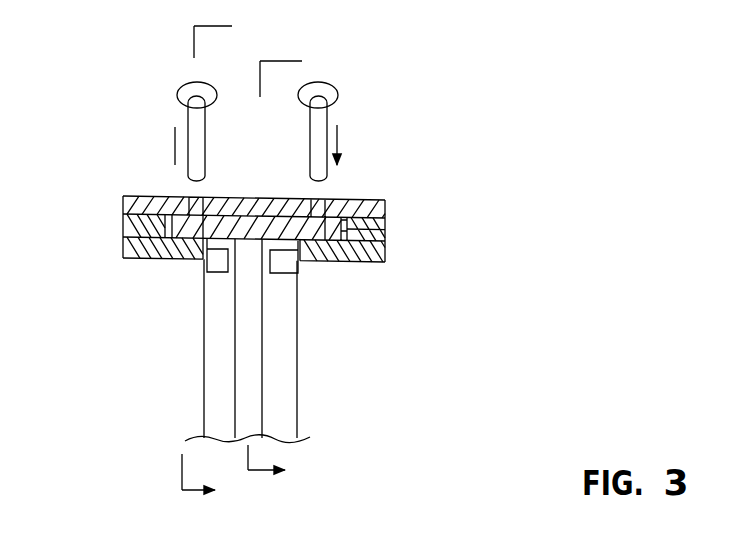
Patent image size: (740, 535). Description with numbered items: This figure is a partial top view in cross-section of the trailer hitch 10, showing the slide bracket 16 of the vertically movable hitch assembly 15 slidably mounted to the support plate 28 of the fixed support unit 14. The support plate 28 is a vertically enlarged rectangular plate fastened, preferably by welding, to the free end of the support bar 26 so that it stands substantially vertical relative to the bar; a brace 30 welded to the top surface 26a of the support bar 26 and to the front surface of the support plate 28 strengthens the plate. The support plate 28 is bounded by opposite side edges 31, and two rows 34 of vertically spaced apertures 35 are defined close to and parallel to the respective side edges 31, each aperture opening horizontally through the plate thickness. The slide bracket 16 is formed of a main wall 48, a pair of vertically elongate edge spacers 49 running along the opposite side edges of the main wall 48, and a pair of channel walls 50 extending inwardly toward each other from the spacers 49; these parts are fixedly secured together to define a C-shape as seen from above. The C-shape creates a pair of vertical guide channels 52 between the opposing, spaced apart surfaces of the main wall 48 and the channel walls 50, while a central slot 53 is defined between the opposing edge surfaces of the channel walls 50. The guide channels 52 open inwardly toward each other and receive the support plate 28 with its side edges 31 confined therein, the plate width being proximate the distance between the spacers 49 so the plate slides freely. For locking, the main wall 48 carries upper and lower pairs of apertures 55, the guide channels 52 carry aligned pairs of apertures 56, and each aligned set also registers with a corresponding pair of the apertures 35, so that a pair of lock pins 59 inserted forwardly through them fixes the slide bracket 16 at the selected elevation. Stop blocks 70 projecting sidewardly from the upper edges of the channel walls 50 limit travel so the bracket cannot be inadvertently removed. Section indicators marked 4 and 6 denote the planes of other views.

The section line 4- 4 is at (219, 261).
The section line 6- 6 is at (287, 264).
The trailer hitch 10 is at (463, 116).
The support unit 14 is at (293, 412).
The hitch assembly 15 is at (493, 199).
The slide bracket 16 is at (386, 208).
The support bar 26 is at (215, 373).
The top surface 26a is at (284, 424).
The support plate 28 is at (357, 262).
The brace 30 is at (240, 382).
The side edges 31 is at (384, 223).
The rows 34 is at (317, 301).
The apertures 35 is at (312, 228).
The main wall 48 is at (136, 201).
The edge spacers 49 is at (384, 235).
The channel walls 50 is at (378, 256).
The guide channels 52 is at (328, 226).
The central slot 53 is at (232, 283).
The apertures 55 is at (318, 204).
The apertures 56 is at (318, 256).
The lock pins 59 is at (324, 118).
The stop blocks 70 is at (301, 266).